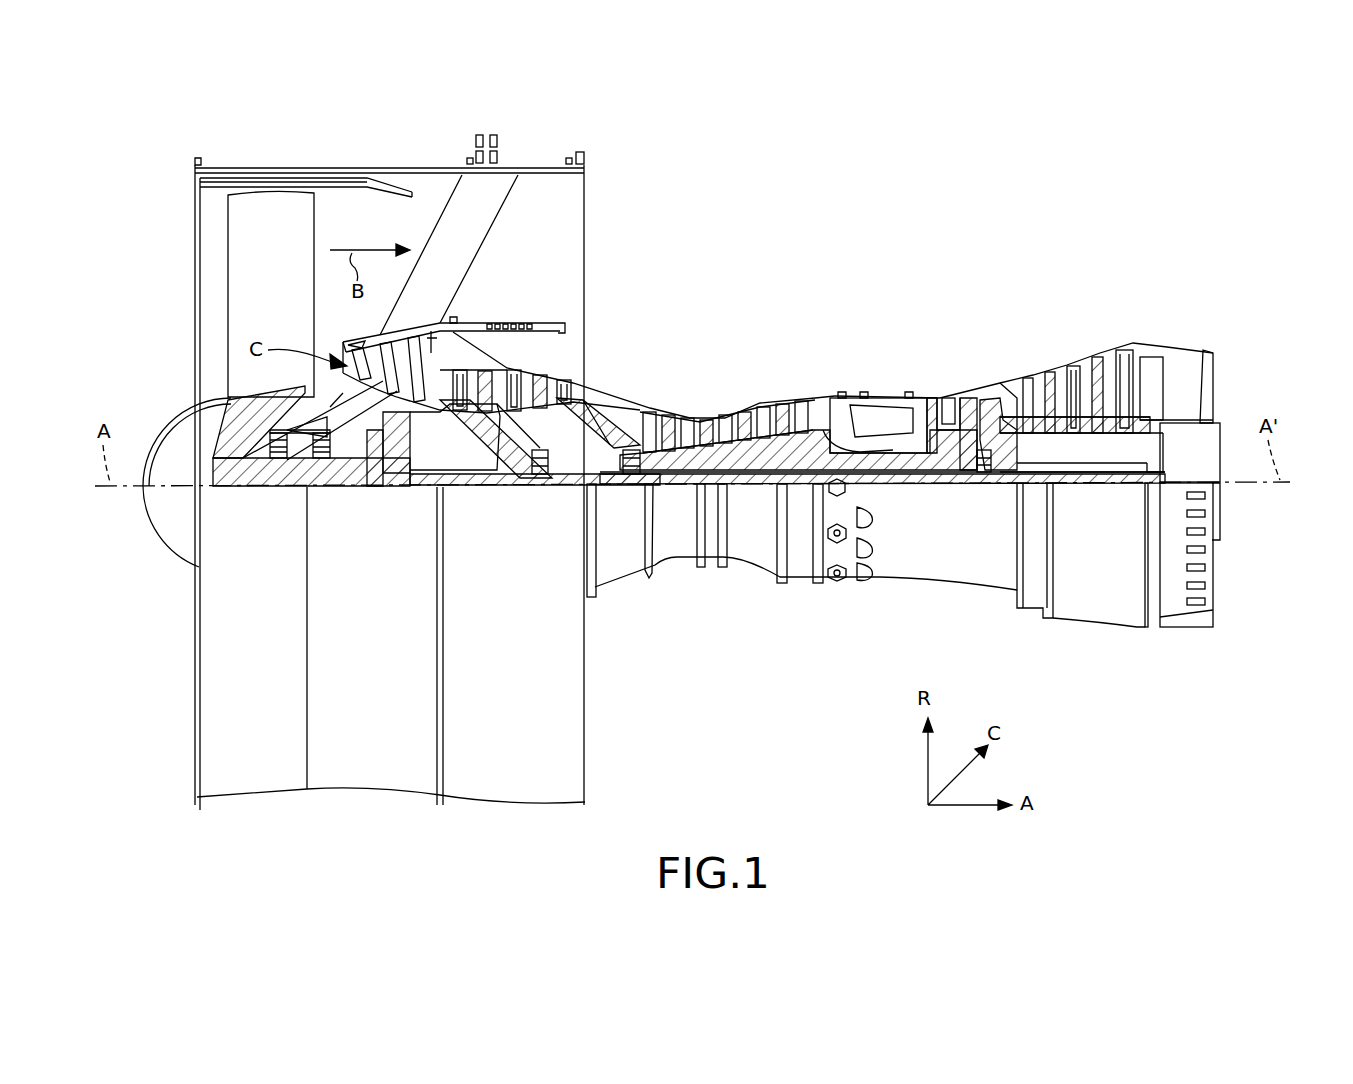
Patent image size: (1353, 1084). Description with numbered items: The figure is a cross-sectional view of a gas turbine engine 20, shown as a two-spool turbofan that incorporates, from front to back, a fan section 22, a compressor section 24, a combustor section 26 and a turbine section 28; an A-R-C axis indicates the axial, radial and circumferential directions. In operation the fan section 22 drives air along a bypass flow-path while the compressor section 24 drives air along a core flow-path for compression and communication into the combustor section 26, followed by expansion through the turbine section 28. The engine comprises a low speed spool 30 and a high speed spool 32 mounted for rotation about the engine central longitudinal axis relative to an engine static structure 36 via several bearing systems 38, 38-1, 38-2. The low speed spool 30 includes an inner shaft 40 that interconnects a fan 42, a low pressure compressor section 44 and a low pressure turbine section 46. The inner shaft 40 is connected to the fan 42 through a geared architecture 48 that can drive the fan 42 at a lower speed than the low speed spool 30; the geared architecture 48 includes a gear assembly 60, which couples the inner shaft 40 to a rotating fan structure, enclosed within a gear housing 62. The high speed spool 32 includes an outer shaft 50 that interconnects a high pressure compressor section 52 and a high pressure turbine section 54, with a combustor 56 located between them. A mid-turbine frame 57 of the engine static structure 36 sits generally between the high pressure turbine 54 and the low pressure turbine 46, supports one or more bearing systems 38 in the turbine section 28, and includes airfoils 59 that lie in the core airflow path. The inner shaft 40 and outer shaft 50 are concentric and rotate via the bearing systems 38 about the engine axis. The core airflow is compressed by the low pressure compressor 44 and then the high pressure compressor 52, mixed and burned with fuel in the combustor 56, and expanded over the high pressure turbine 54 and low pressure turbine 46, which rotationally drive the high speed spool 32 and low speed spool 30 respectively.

The gas turbine engine 20 is at (929, 203).
The fan section 22 is at (440, 150).
The compressor section 24 is at (443, 282).
The combustor section 26 is at (935, 282).
The turbine section 28 is at (1150, 282).
The low speed spool 30 is at (760, 494).
The high speed spool 32 is at (800, 450).
The engine static structure 36 is at (368, 790).
The bearing system 38 is at (990, 475).
The bearing system 38-1 is at (282, 470).
The bearing system 38-2 is at (538, 475).
The inner shaft 40 is at (612, 485).
The fan 42 is at (281, 295).
The low pressure compressor section 44 is at (520, 382).
The low pressure turbine section 46 is at (1082, 362).
The geared architecture 48 is at (400, 497).
The outer shaft 50 is at (880, 470).
The high pressure compressor section 52 is at (740, 452).
The high pressure turbine section 54 is at (948, 400).
The combustor 56 is at (880, 405).
The mid-turbine frame 57 is at (990, 405).
The airfoils 59 is at (1000, 405).
The gear assembly 60 is at (418, 465).
The gear housing 62 is at (400, 437).